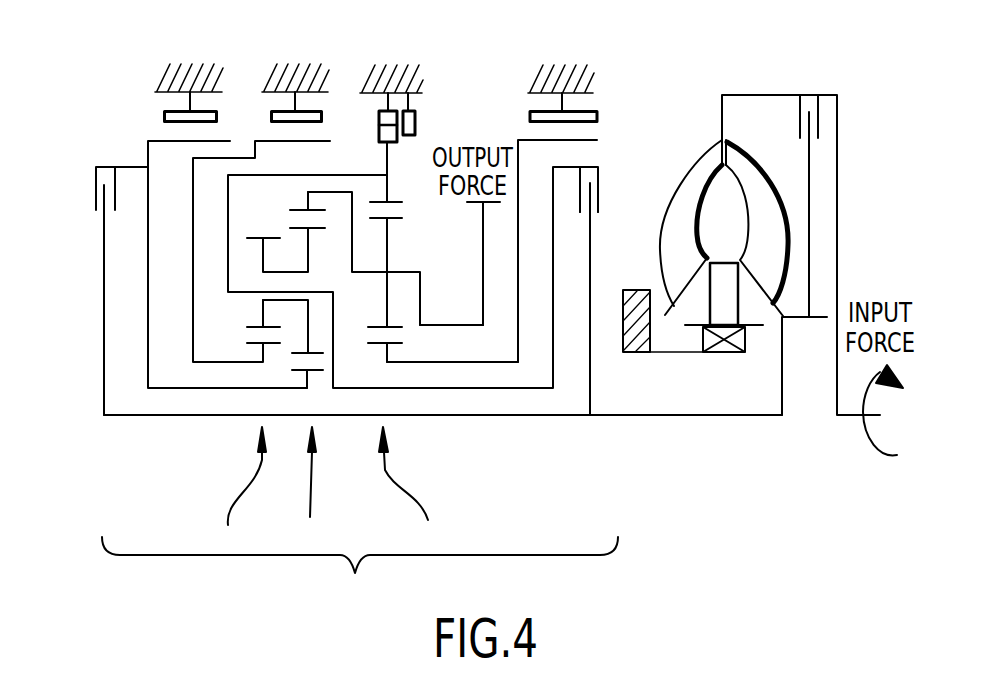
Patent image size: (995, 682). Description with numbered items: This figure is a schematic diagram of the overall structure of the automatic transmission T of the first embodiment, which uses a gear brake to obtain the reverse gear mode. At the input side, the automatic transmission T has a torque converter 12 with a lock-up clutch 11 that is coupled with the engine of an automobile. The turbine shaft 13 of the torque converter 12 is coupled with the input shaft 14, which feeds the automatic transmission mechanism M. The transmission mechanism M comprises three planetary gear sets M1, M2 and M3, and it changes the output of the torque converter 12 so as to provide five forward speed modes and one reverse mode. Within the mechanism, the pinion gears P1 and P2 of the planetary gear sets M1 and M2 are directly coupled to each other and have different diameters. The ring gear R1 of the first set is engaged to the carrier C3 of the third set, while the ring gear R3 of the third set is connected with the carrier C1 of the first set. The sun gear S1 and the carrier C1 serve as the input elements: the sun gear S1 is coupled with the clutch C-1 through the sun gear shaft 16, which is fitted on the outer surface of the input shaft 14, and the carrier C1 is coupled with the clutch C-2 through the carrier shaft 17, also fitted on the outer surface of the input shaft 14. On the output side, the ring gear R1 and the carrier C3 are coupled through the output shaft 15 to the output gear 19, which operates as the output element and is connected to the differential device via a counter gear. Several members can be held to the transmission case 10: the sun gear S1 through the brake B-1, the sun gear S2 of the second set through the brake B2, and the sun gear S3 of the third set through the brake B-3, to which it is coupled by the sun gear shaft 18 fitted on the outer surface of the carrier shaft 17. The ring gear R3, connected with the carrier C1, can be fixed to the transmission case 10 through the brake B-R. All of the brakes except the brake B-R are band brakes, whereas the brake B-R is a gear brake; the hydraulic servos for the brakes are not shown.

The transmission case 10 is at (193, 65).
The brake B-1 is at (163, 110).
The brake B2 is at (308, 110).
The gear brake B-R is at (415, 128).
The brake B-3 is at (528, 108).
The clutch C-1 is at (87, 193).
The clutch C-2 is at (600, 190).
The automatic transmission T is at (751, 261).
The lock-up clutch 11 is at (800, 107).
The torque converter 12 is at (697, 162).
The turbine shaft 13 is at (733, 415).
The input shaft 14 is at (570, 417).
The output shaft 15 is at (445, 328).
The sun gear shaft 16 is at (167, 388).
The carrier shaft 17 is at (507, 390).
The sun gear shaft 18 is at (436, 362).
The output gear 19 is at (488, 204).
The ring gear R1 is at (293, 210).
The pinion gear P2 is at (272, 238).
The carrier C1 is at (303, 288).
The ring gear R3 is at (400, 202).
The carrier C3 is at (407, 274).
The sun gear S2 is at (253, 343).
The sun gear S3 is at (372, 343).
The pinion gear P1 is at (322, 346).
The sun gear S1 is at (318, 372).
The planetary gear set M1 is at (306, 491).
The planetary gear set M2 is at (247, 488).
The planetary gear set M3 is at (409, 490).
The automatic transmission mechanism M is at (360, 571).